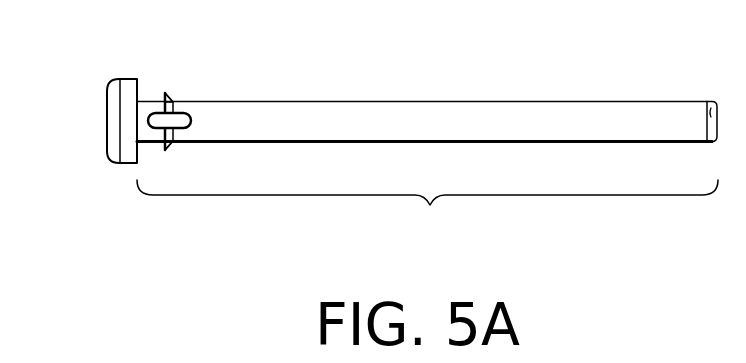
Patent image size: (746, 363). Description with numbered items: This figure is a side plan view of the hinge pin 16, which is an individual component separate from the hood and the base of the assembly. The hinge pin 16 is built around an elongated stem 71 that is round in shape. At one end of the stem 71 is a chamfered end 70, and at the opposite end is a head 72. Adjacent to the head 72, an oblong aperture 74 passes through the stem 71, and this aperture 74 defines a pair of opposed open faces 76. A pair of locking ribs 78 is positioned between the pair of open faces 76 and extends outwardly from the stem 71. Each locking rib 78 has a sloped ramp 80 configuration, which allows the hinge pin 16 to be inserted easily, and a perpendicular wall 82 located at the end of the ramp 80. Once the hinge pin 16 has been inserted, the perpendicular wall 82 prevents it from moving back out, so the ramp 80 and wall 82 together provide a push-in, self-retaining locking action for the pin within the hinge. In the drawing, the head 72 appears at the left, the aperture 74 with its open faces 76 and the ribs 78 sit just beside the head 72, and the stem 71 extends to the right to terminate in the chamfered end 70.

The hinge pin 16 is at (492, 102).
The chamfered end 70 is at (715, 102).
The elongated stem 71 is at (427, 212).
The head 72 is at (107, 124).
The oblong aperture 74 is at (186, 122).
The open faces 76 is at (175, 143).
The locking ribs 78 is at (165, 93).
The sloped ramp 80 is at (175, 101).
The perpendicular wall 82 is at (183, 132).